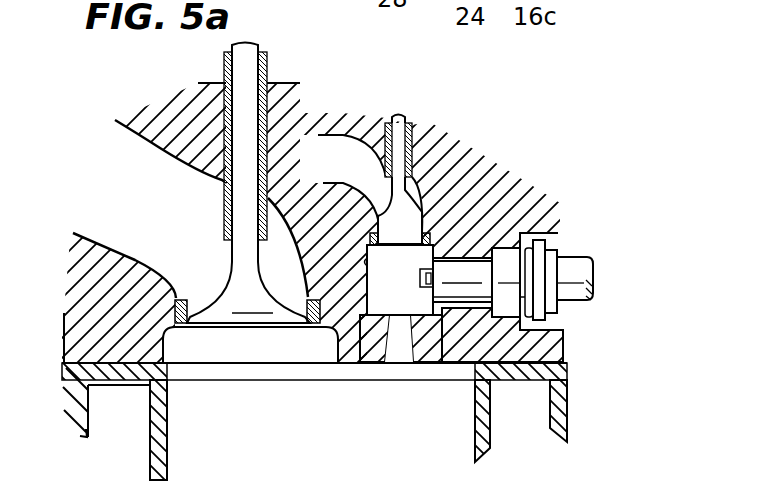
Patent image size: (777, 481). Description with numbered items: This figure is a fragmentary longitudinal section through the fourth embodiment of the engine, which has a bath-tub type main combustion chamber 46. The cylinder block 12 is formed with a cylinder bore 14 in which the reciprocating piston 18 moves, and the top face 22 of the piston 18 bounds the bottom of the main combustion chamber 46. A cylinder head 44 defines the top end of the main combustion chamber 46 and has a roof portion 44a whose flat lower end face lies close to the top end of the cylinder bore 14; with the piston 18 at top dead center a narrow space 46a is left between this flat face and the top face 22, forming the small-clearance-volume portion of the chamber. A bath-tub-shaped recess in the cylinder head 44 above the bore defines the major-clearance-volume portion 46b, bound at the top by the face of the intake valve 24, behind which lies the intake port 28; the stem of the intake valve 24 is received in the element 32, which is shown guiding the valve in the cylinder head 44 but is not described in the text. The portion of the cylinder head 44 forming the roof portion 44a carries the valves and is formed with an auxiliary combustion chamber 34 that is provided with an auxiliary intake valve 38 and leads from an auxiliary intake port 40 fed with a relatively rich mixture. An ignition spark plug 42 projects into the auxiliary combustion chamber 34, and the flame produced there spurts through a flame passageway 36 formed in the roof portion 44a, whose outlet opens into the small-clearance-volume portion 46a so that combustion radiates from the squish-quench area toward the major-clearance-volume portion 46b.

The cylinder block 12 is at (585, 416).
The cylinder bore 14 is at (472, 438).
The reciprocating piston 18 is at (152, 478).
The top face 22 is at (224, 377).
The intake valve 24 is at (233, 268).
The intake port 28 is at (147, 260).
The valve stem guide 32 is at (267, 66).
The auxiliary combustion chamber 34 is at (366, 261).
The flame passageway 36 is at (397, 364).
The auxiliary intake valve 38 is at (412, 218).
The auxiliary intake port 40 is at (345, 138).
The ignition spark plug 42 is at (419, 275).
The cylinder head 44 is at (66, 337).
The roof portion 44a is at (430, 365).
The main combustion chamber 46 is at (321, 391).
The narrow space 46a is at (398, 368).
The major-clearance-volume portion 46b is at (267, 355).